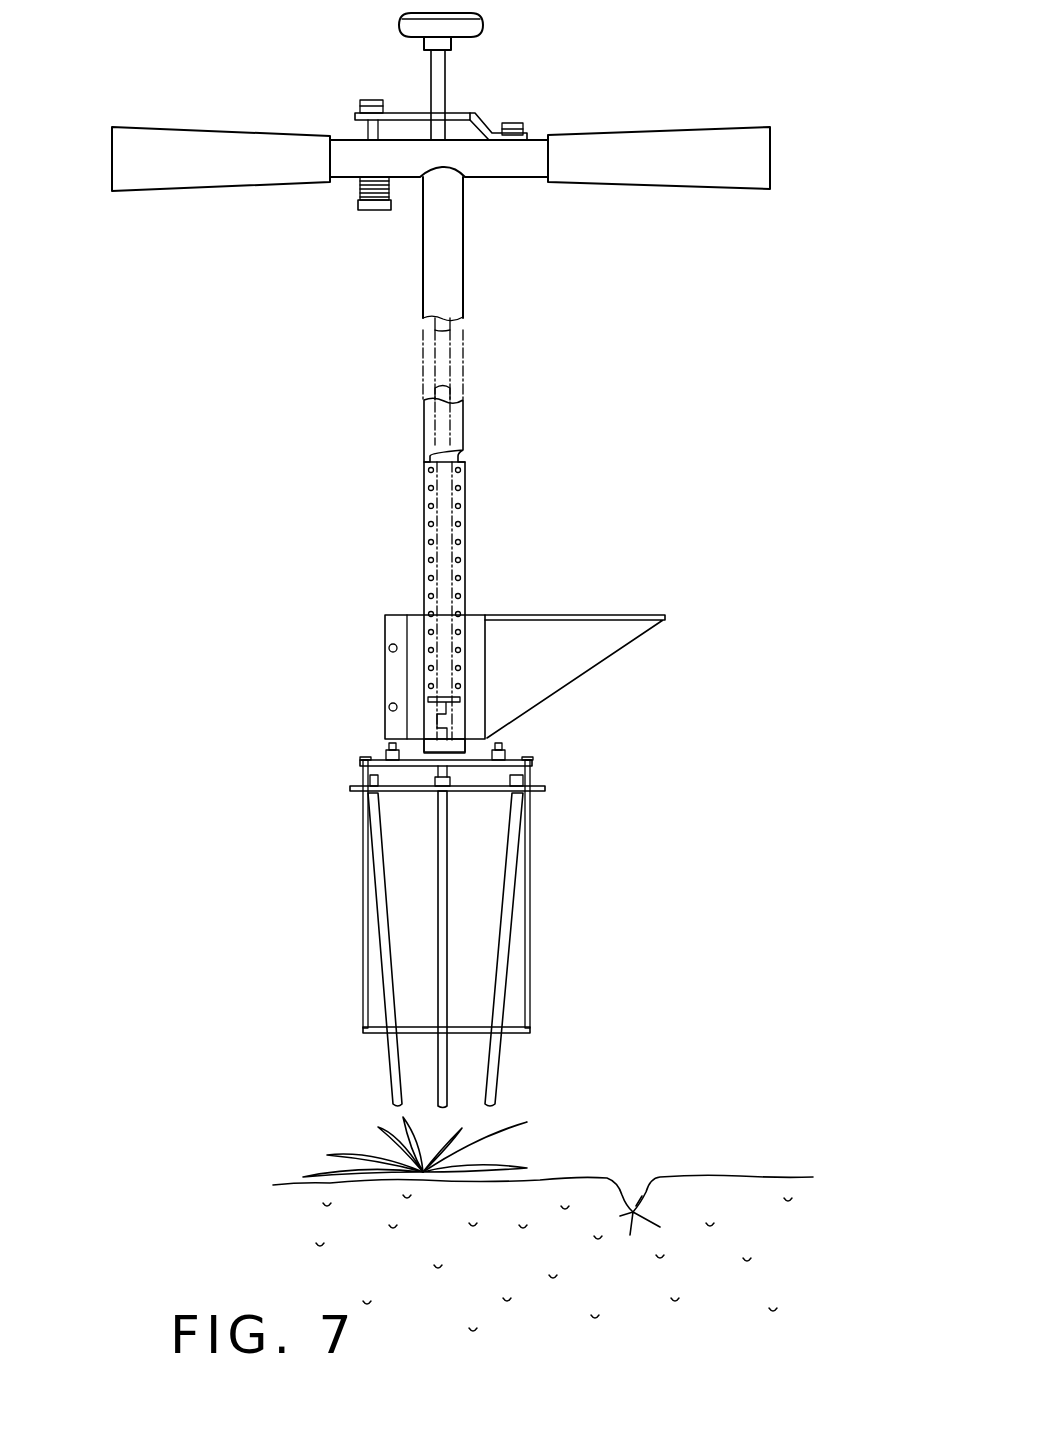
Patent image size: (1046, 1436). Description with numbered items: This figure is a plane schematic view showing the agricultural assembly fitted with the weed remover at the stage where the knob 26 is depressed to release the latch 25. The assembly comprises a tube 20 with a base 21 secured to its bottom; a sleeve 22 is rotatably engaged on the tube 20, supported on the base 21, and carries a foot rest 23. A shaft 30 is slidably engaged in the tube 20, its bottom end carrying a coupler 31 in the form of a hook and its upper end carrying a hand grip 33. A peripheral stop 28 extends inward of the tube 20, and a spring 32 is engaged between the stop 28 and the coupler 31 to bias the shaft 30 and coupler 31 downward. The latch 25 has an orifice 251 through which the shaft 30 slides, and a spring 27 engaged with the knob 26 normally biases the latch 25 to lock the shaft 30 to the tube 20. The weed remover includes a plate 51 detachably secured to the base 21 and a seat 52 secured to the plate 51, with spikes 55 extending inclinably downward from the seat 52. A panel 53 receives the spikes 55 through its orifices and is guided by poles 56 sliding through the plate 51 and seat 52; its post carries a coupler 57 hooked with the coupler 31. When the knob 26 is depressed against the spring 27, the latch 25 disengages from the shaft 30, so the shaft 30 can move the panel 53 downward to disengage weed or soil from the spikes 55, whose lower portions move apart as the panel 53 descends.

The tube 20 is at (454, 289).
The base 21 is at (507, 758).
The sleeve 22 is at (412, 752).
The foot rest 23 is at (613, 635).
The latch 25 is at (403, 108).
The orifice 251 is at (455, 111).
The knob 26 is at (378, 211).
The spring 27 is at (359, 190).
The peripheral stop 28 is at (466, 455).
The shaft 30 is at (437, 508).
The coupler 31 is at (437, 703).
The spring 32 is at (465, 540).
The hand grip 33 is at (468, 23).
The plate 51 is at (535, 762).
The seat 52 is at (543, 789).
The panel 53 is at (530, 1028).
The spikes 55 is at (495, 1073).
The poles 56 is at (530, 908).
The coupler 57 is at (440, 747).